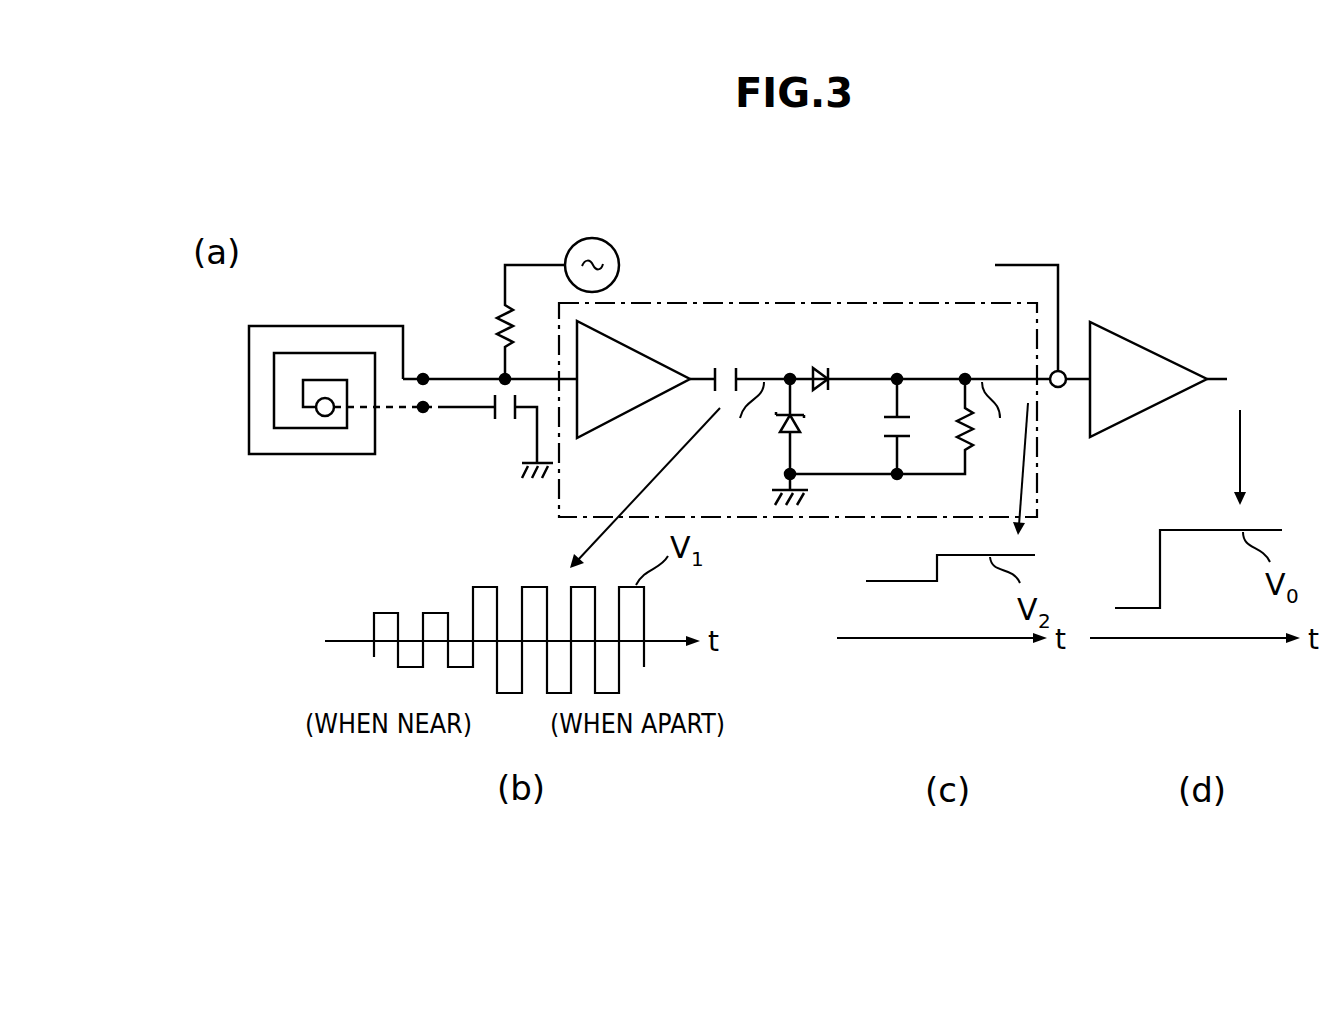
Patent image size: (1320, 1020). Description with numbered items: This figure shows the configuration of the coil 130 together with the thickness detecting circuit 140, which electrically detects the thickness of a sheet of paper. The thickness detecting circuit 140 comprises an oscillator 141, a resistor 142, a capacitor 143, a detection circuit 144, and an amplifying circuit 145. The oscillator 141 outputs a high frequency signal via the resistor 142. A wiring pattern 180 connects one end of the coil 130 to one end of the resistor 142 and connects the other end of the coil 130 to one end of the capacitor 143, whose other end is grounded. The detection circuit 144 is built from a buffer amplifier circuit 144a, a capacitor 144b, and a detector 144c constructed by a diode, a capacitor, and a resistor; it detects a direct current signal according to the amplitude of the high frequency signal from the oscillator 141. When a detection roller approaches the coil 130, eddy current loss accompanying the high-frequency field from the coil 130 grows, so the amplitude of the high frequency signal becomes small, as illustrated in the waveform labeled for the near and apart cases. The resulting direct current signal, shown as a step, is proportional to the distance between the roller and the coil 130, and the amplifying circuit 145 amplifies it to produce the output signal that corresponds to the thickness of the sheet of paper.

The coil 130 is at (334, 455).
The wiring pattern 180 is at (450, 409).
The capacitor 143 is at (507, 418).
The resistor 142 is at (505, 306).
The oscillator 141 is at (595, 242).
The detection circuit 144 is at (756, 302).
The buffer amplifier circuit 144a is at (636, 351).
The capacitor 144b is at (736, 368).
The detector 144c is at (920, 360).
The thickness detecting circuit 140 is at (1044, 212).
The amplifying circuit 145 is at (1158, 355).